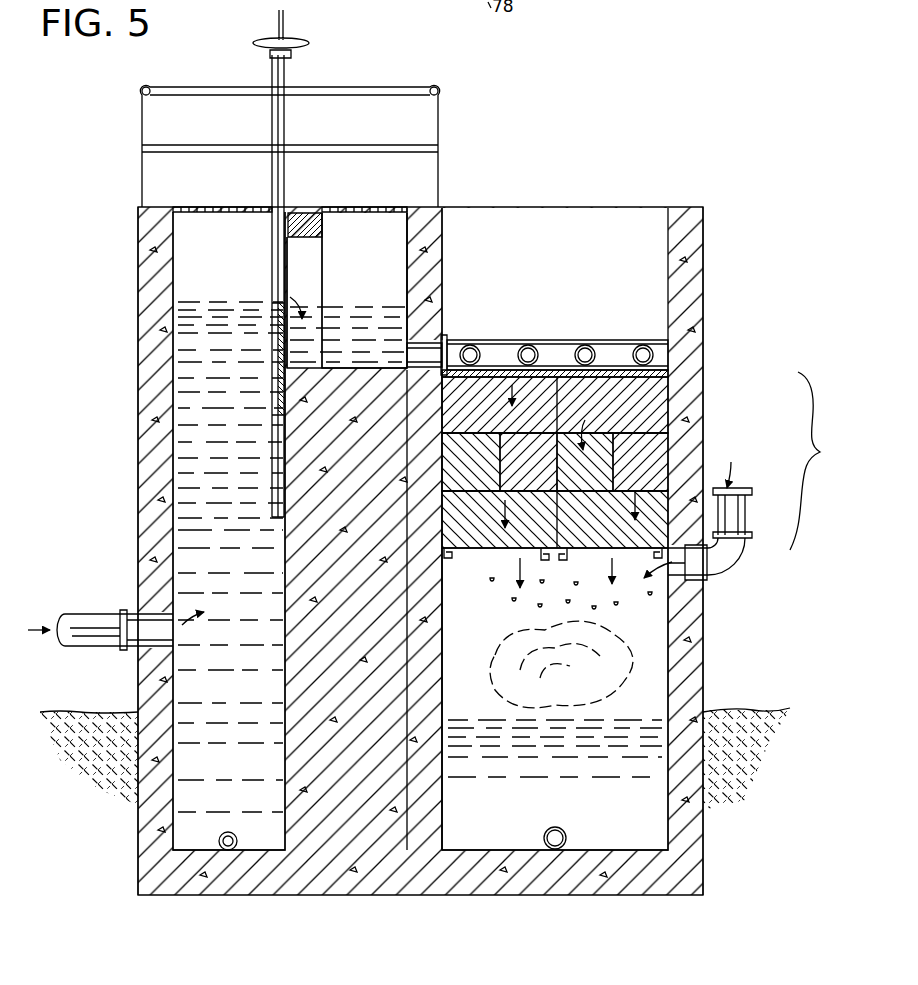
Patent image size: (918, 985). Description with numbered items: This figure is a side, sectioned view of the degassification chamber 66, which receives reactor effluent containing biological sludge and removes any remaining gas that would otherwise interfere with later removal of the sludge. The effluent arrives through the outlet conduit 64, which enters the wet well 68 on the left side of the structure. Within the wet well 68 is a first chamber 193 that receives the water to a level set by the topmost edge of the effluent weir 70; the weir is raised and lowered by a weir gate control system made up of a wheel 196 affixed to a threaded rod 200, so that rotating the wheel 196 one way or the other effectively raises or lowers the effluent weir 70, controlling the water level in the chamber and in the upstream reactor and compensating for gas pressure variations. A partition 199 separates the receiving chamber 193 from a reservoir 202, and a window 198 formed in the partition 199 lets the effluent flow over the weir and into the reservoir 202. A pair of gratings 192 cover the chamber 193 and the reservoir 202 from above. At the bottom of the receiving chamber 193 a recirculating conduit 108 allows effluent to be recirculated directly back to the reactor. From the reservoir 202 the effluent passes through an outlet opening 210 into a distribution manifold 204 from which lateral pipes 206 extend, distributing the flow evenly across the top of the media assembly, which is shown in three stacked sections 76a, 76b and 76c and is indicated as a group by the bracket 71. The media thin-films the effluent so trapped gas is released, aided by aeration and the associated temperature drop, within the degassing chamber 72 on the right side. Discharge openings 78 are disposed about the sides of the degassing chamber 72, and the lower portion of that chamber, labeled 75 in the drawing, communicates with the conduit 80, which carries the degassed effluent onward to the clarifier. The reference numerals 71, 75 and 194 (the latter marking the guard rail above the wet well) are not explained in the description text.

The outlet conduit 64 is at (92, 620).
The degassification chamber 66 is at (692, 197).
The wet well 68 is at (138, 300).
The effluent weir 70 is at (389, 348).
The filter bed assembly 71 is at (820, 461).
The degassing chamber 72 is at (705, 270).
The lower chamber 75 is at (400, 662).
The media assembly section 76a is at (655, 405).
The media assembly section 76b is at (655, 463).
The media assembly section 76c is at (606, 530).
The discharge openings 78 is at (726, 562).
The conduit 80 is at (573, 828).
The recirculating conduit 108 is at (228, 832).
The gratings 192 is at (236, 206).
The first chamber 193 is at (190, 243).
The guard rail 194 is at (296, 141).
The wheel 196 is at (282, 38).
The window 198 is at (305, 276).
The partition 199 is at (310, 230).
The threaded rod 200 is at (284, 188).
The reservoir 202 is at (400, 272).
The distribution manifold 204 is at (546, 350).
The lateral pipes 206 is at (596, 350).
The outlet opening 210 is at (422, 338).